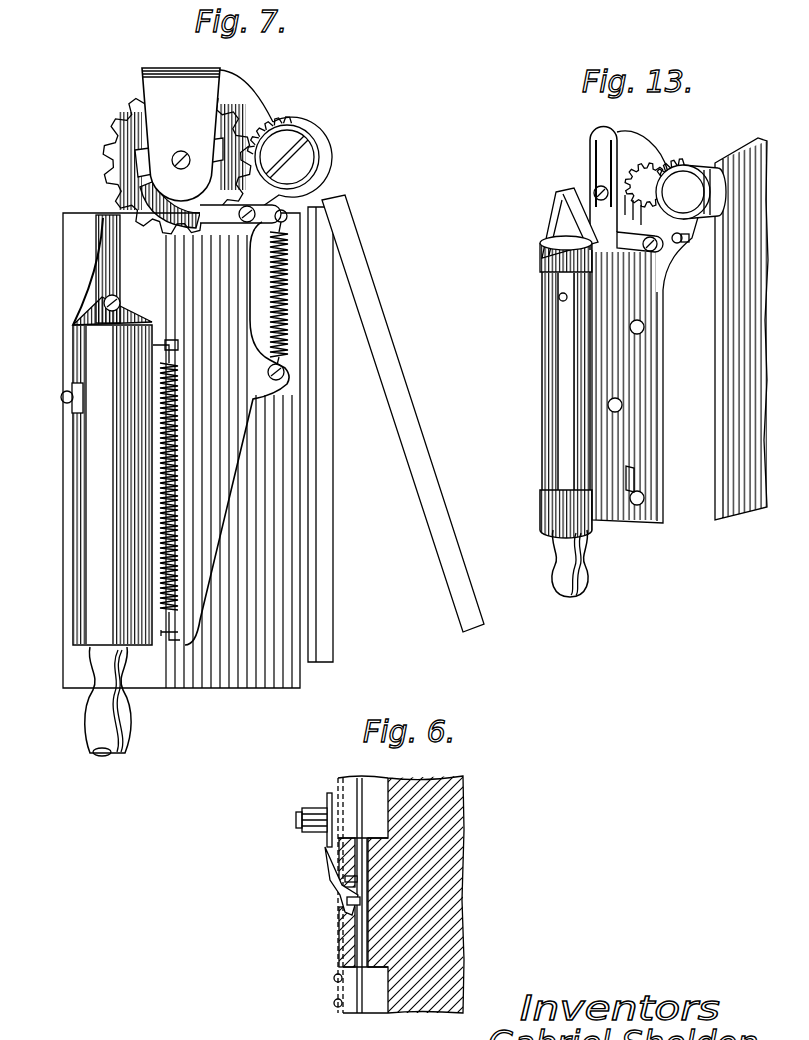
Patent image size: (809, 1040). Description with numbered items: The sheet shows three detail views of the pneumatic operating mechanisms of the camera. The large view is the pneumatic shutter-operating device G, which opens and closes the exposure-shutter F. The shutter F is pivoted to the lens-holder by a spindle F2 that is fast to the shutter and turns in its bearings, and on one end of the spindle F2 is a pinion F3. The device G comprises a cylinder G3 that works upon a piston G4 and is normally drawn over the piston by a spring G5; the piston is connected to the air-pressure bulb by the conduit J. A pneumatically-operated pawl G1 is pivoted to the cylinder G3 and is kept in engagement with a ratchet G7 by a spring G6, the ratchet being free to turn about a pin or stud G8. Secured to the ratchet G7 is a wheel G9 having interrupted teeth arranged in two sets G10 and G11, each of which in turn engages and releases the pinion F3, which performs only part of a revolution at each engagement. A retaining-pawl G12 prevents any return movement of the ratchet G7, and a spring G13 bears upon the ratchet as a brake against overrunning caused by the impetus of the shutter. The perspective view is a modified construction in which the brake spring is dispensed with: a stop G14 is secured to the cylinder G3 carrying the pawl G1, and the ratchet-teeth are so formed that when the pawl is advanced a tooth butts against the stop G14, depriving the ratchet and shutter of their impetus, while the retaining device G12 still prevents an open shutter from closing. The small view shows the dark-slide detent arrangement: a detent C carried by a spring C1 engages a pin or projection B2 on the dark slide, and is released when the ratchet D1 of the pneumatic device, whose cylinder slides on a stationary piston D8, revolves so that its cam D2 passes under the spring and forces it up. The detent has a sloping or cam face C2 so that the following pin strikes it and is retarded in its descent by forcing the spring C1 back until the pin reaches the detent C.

In FIG. 7, the ratchet G7 is at (65, 213).
In FIG. 13, the ratchet G7 is at (578, 152).
In FIG. 7, the wheel having interrupted teeth G9 is at (118, 170).
In FIG. 13, the wheel having interrupted teeth G9 is at (641, 160).
In FIG. 7, the brake spring G13 is at (143, 163).
In FIG. 7, the second set of teeth G11 is at (152, 216).
In FIG. 7, the pawl spring G6 is at (93, 258).
In FIG. 7, the pneumatically-operated pawl G1 is at (108, 264).
In FIG. 13, the pneumatically-operated pawl G1 is at (570, 217).
In FIG. 7, the pin or stud G8 is at (181, 134).
In FIG. 7, the first set of teeth G10 is at (237, 108).
In FIG. 7, the pinion F3 is at (288, 122).
In FIG. 13, the pinion F3 is at (688, 160).
In FIG. 7, the spindle F2 is at (300, 150).
In FIG. 13, the spindle F2 is at (692, 190).
In FIG. 7, the exposure-shutter F is at (358, 301).
In FIG. 13, the exposure-shutter F is at (727, 348).
In FIG. 7, the retaining-pawl G12 is at (121, 302).
In FIG. 13, the retaining-pawl G12 is at (649, 252).
In FIG. 7, the cylinder return spring G5 is at (181, 421).
In FIG. 7, the cylinder G3 is at (100, 499).
In FIG. 13, the cylinder G3 is at (562, 409).
In FIG. 7, the piston G4 is at (150, 647).
In FIG. 7, the conduit J is at (125, 727).
In FIG. 13, the conduit J is at (579, 563).
In FIG. 13, the stop G14 is at (590, 234).
In FIG. 13, the pneumatic device G is at (601, 361).
In FIG. 13, the stationary piston D8 is at (562, 514).
In FIG. 6, the cam D2 is at (300, 789).
In FIG. 6, the ratchet D1 is at (328, 849).
In FIG. 6, the detent C is at (340, 868).
In FIG. 6, the spring C1 is at (345, 908).
In FIG. 6, the sloping or cam face C2 is at (350, 880).
In FIG. 6, the pin or projection B2 is at (360, 901).